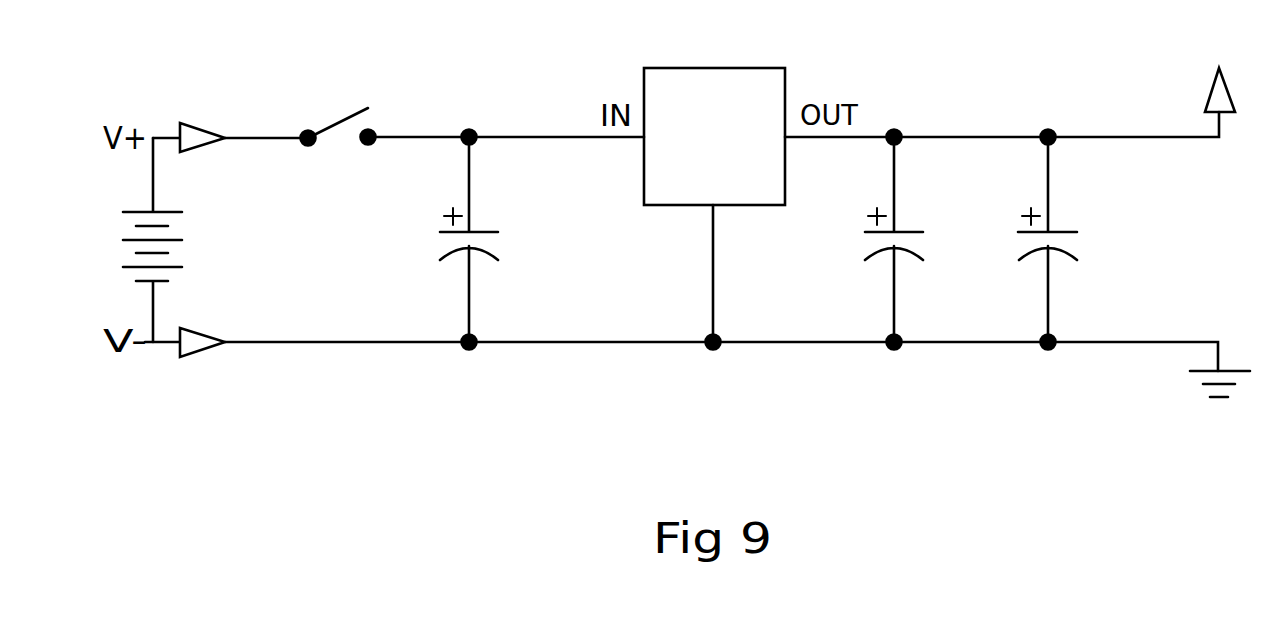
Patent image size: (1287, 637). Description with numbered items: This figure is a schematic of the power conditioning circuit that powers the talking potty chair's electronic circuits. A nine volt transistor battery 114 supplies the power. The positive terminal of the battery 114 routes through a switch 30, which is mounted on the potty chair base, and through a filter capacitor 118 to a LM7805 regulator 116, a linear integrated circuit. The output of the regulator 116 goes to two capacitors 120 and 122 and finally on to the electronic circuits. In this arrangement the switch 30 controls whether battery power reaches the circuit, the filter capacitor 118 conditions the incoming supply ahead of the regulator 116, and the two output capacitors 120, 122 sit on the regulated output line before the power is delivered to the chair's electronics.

The switch 30 is at (343, 117).
The nine volt transistor battery 114 is at (122, 255).
The LM7805 regulator 116 is at (700, 67).
The filter capacitor 118 is at (485, 230).
The capacitor 120 is at (907, 227).
The capacitor 122 is at (1062, 227).